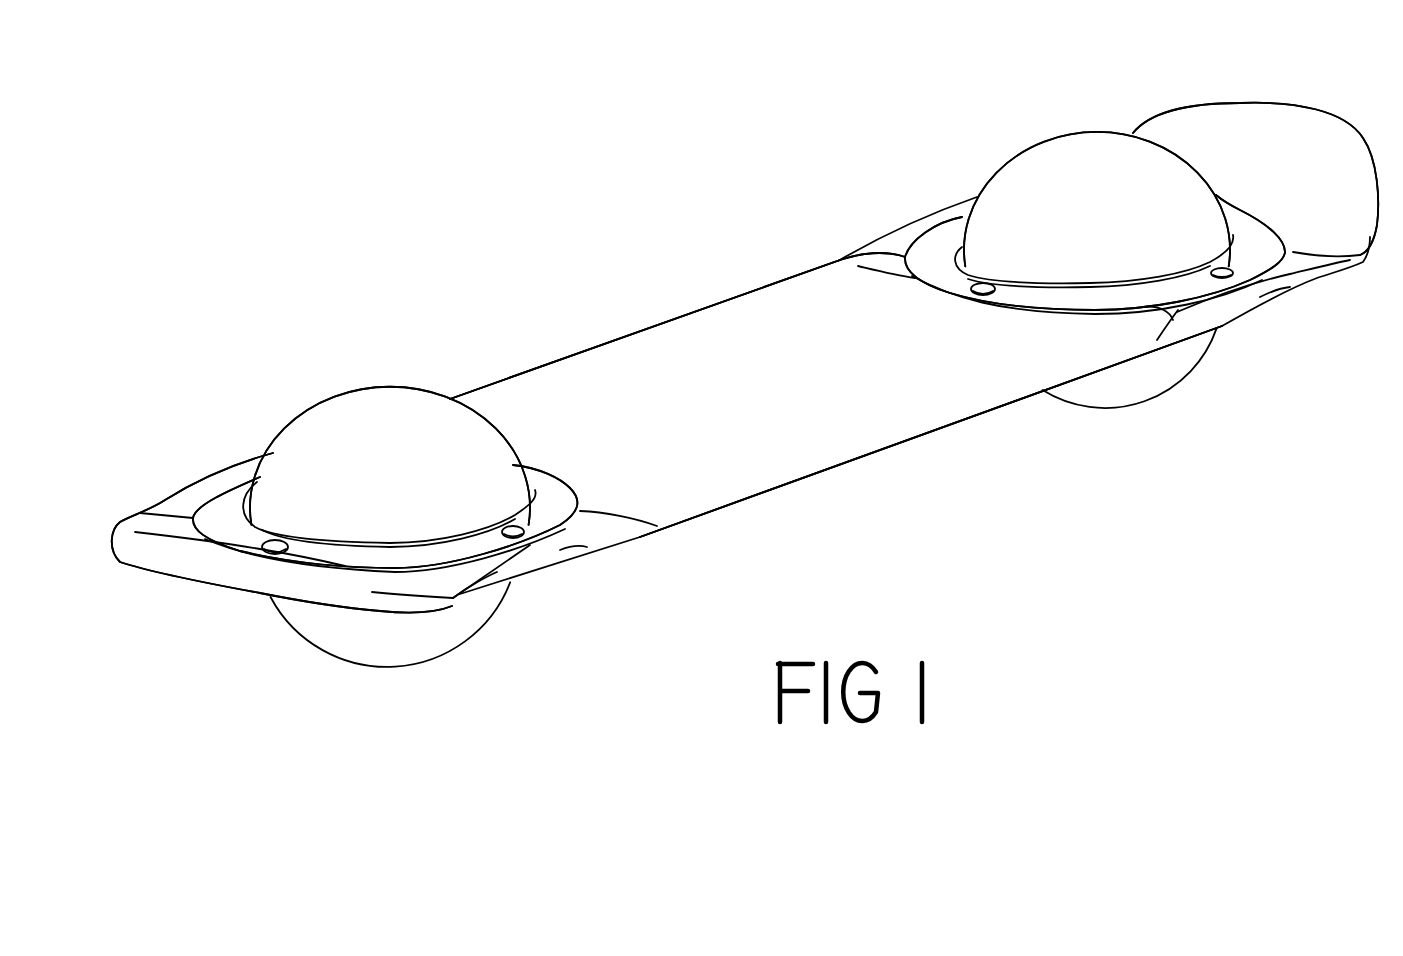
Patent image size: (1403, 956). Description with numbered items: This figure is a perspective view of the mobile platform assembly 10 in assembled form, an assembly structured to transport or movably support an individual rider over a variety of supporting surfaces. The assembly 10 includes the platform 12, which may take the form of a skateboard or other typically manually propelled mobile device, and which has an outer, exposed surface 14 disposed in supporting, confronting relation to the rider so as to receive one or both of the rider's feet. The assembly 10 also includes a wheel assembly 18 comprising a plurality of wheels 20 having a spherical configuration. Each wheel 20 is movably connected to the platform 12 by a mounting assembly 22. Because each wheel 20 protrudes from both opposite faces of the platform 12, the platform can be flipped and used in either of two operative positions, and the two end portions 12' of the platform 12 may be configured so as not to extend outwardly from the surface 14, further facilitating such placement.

The mobile platform assembly 10 is at (700, 263).
The platform 12 is at (745, 358).
The end portions 12' is at (734, 319).
The outer, exposed surface 14 is at (820, 430).
The wheel assembly 18 is at (421, 358).
The wheels 20 is at (372, 390).
The mounting assembly 22 is at (550, 470).